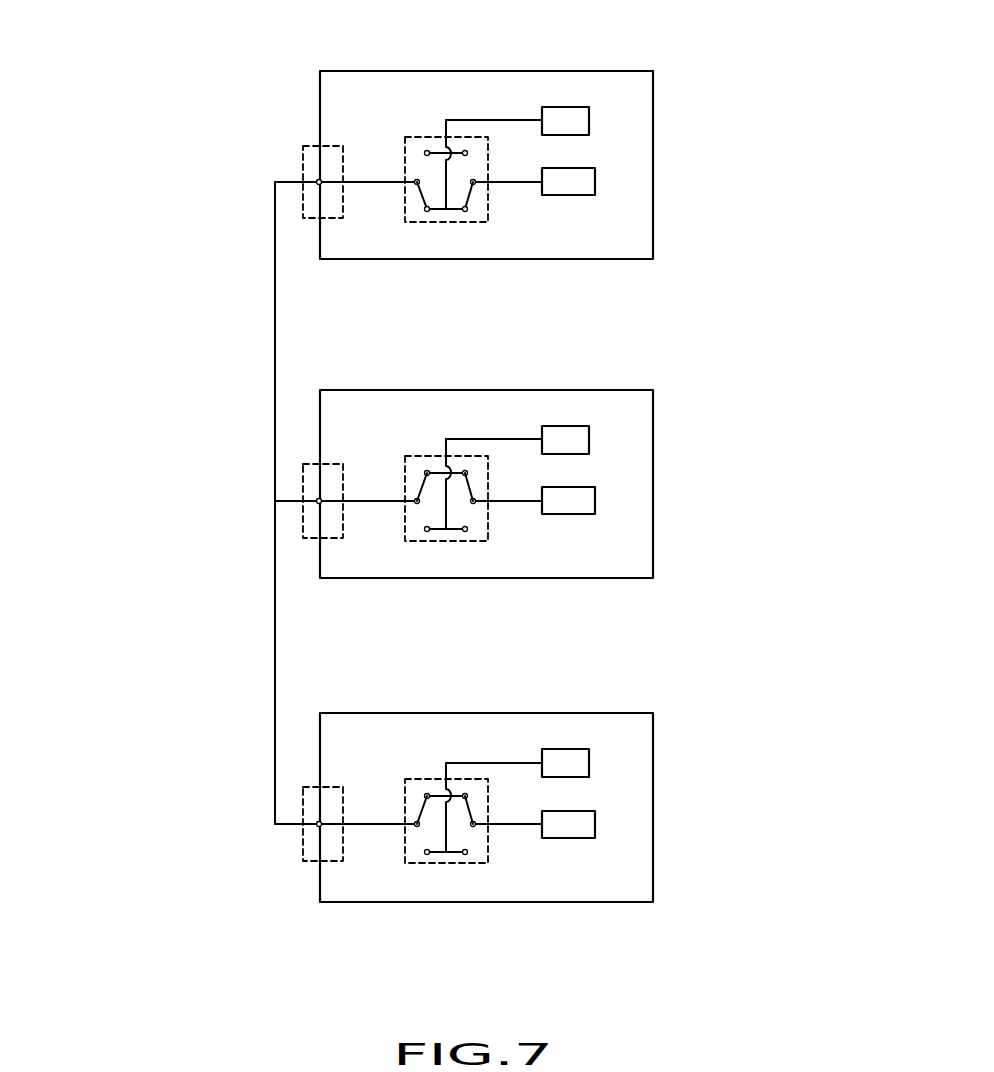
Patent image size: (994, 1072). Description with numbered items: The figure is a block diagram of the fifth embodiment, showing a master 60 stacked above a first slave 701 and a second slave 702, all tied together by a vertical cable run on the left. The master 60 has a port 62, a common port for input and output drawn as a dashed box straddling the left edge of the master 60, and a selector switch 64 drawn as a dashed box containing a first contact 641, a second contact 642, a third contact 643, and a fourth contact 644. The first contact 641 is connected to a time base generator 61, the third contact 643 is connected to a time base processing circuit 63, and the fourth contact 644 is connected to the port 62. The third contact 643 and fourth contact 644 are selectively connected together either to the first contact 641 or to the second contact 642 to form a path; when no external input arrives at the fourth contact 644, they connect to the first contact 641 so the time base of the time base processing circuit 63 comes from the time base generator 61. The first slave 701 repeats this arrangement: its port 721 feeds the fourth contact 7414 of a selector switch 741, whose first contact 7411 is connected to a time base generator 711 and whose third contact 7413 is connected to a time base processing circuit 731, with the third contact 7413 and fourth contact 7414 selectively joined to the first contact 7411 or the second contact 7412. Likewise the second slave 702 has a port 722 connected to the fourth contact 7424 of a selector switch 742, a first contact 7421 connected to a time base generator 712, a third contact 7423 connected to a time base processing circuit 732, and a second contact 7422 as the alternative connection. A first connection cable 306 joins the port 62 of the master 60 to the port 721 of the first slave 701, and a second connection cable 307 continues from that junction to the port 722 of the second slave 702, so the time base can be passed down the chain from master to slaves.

The master 60 is at (657, 113).
The time base generator 61 is at (570, 106).
The port 62 is at (318, 181).
The time base processing circuit 63 is at (596, 181).
The selector switch 64 is at (444, 155).
The first contact 641 is at (446, 210).
The second contact 642 is at (450, 150).
The third contact 643 is at (481, 177).
The fourth contact 644 is at (408, 180).
The first connection cable 306 is at (275, 348).
The second connection cable 307 is at (275, 620).
The first slave 701 is at (655, 425).
The time base generator 711 is at (583, 426).
The port 721 is at (318, 500).
The time base processing circuit 731 is at (596, 500).
The selector switch 741 is at (442, 477).
The first contact 7411 is at (449, 530).
The second contact 7412 is at (460, 471).
The third contact 7413 is at (478, 497).
The fourth contact 7414 is at (409, 498).
The second slave 702 is at (655, 748).
The time base generator 712 is at (583, 748).
The port 722 is at (318, 823).
The time base processing circuit 732 is at (596, 823).
The selector switch 742 is at (442, 799).
The first contact 7421 is at (449, 853).
The second contact 7422 is at (460, 793).
The third contact 7423 is at (478, 820).
The fourth contact 7424 is at (409, 821).